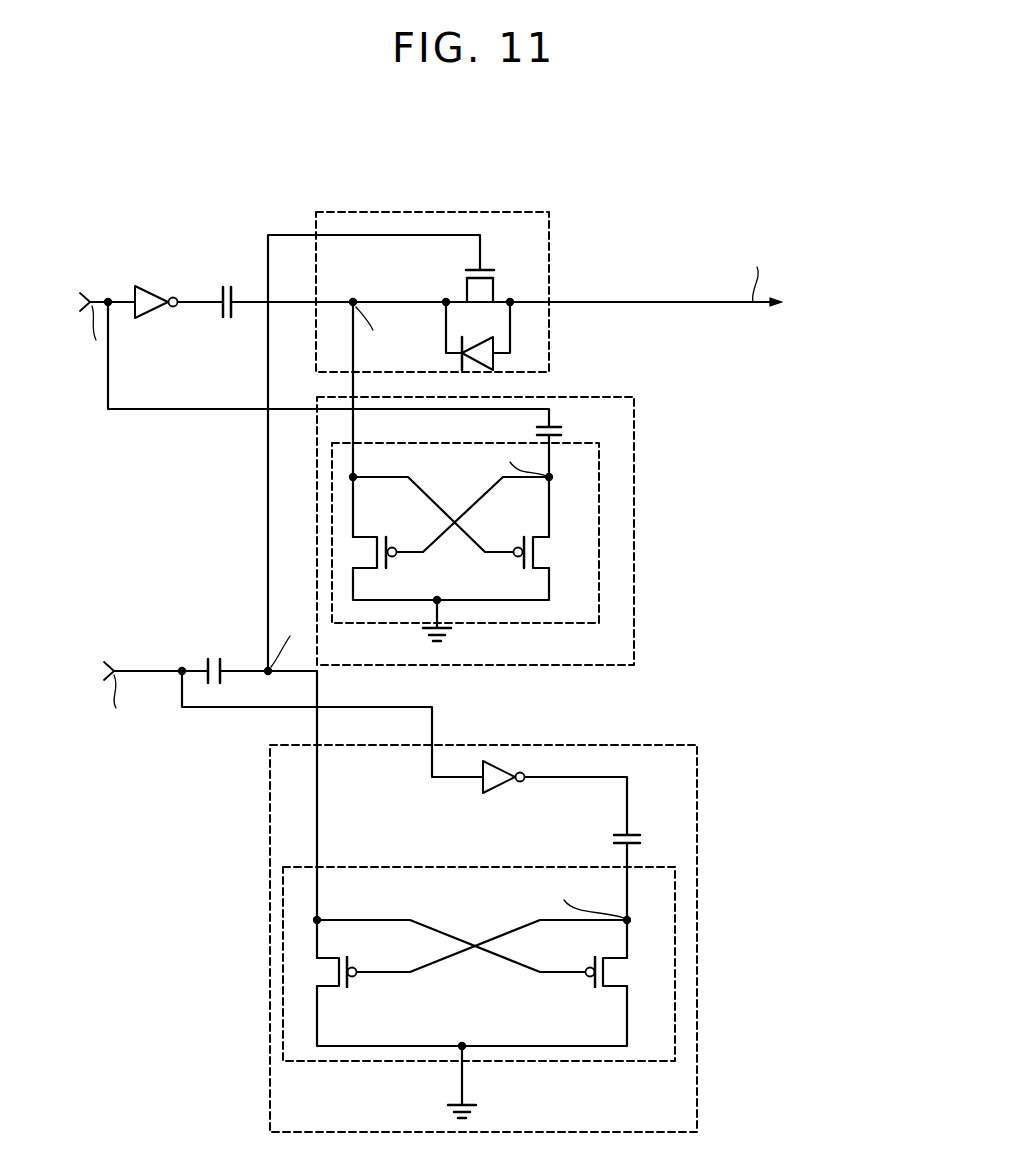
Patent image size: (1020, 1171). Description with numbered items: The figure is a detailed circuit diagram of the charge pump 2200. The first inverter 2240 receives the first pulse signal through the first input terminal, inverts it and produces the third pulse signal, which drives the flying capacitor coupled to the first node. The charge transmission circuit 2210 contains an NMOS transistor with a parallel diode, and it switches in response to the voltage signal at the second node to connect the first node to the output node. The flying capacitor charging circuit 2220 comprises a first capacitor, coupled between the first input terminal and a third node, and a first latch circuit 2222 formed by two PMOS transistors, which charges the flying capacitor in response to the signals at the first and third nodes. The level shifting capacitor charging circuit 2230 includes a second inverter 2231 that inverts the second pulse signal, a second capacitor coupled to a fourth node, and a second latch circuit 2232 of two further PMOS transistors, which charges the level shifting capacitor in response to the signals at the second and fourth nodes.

The charge pump 2200 is at (464, 152).
The charge transmission circuit 2210 is at (549, 222).
The flying capacitor charging circuit 2220 is at (634, 627).
The first latch circuit 2222 is at (599, 507).
The level shifting capacitor charging circuit 2230 is at (697, 938).
The second inverter 2231 is at (497, 790).
The second latch circuit 2232 is at (675, 1040).
The first inverter 2240 is at (148, 285).